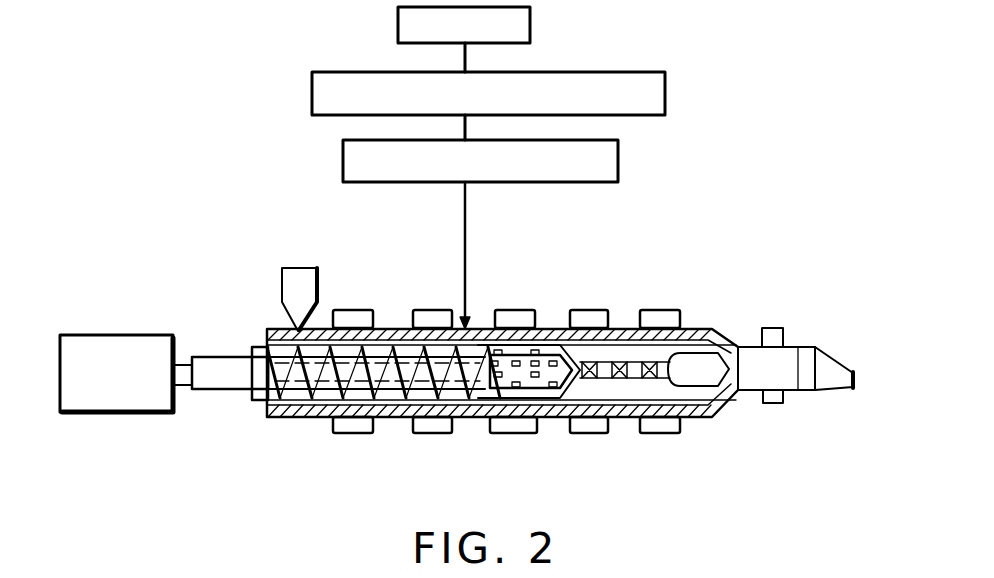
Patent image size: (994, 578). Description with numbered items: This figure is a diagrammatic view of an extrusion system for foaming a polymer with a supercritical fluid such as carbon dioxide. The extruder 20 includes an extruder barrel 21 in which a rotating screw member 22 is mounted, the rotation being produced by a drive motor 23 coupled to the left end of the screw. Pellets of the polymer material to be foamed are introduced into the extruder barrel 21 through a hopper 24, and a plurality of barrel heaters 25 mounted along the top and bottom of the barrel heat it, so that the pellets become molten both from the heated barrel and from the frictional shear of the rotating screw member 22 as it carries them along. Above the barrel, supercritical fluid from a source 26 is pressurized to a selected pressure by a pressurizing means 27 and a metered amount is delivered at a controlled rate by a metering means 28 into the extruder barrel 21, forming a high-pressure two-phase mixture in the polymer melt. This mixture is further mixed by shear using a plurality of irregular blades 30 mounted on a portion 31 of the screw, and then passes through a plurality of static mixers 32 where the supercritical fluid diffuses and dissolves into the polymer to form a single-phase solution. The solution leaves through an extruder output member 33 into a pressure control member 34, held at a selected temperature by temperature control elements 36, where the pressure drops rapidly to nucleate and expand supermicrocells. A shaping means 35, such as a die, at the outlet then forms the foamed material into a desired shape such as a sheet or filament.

The extruder 20 is at (316, 442).
The extruder barrel 21 is at (283, 418).
The rotating screw member 22 is at (219, 352).
The drive motor 23 is at (129, 331).
The hopper 24 is at (323, 257).
The barrel heaters 25 is at (410, 316).
The source 26 is at (398, 27).
The pressurizing means 27 is at (632, 72).
The metering means 28 is at (620, 162).
The irregular blades 30 is at (529, 376).
The portion of extruder screw 31 is at (520, 348).
The static mixers 32 is at (615, 350).
The extruder output member 33 is at (690, 362).
The pressure control member 34 is at (780, 360).
The shaping means 35 is at (828, 378).
The temperature control elements 36 is at (770, 393).